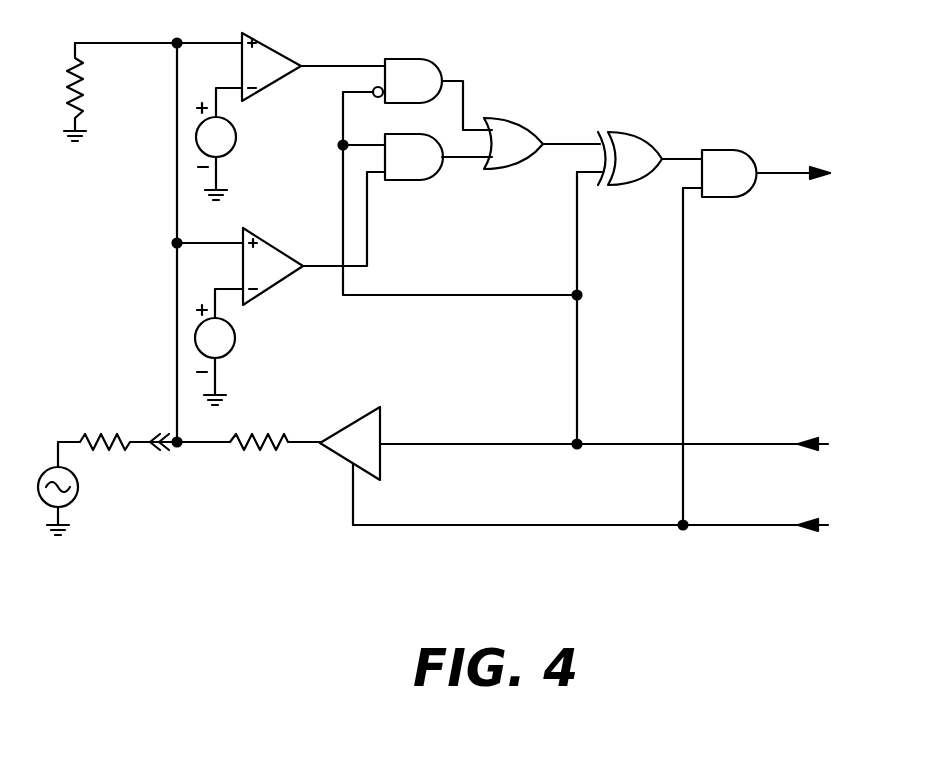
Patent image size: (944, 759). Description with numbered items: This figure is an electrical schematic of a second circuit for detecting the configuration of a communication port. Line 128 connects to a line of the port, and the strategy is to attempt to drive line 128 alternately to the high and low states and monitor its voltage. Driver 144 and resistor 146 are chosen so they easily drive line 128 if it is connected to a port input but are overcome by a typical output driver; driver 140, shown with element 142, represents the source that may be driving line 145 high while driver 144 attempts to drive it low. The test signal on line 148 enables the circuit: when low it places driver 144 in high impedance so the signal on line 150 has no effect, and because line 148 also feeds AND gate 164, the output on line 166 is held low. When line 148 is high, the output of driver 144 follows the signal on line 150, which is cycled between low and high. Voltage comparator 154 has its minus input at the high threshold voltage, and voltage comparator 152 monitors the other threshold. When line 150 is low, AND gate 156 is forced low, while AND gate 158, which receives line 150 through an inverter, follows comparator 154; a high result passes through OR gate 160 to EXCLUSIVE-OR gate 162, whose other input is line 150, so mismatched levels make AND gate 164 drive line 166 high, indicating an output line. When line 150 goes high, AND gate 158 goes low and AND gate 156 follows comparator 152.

The line 128 is at (163, 450).
The driver 140 is at (77, 493).
The resistor 142 is at (108, 433).
The driver 144 is at (357, 415).
The line 145 is at (177, 295).
The resistor 146 is at (248, 470).
The line 148 is at (773, 530).
The line 150 is at (777, 444).
The voltage comparator 152 is at (280, 250).
The voltage comparator 154 is at (282, 55).
The AND gate 156 is at (425, 182).
The AND gate 158 is at (430, 63).
The OR gate 160 is at (522, 125).
The EXCLUSIVE-OR gate 162 is at (638, 142).
The AND gate 164 is at (737, 155).
The line 166 is at (798, 173).